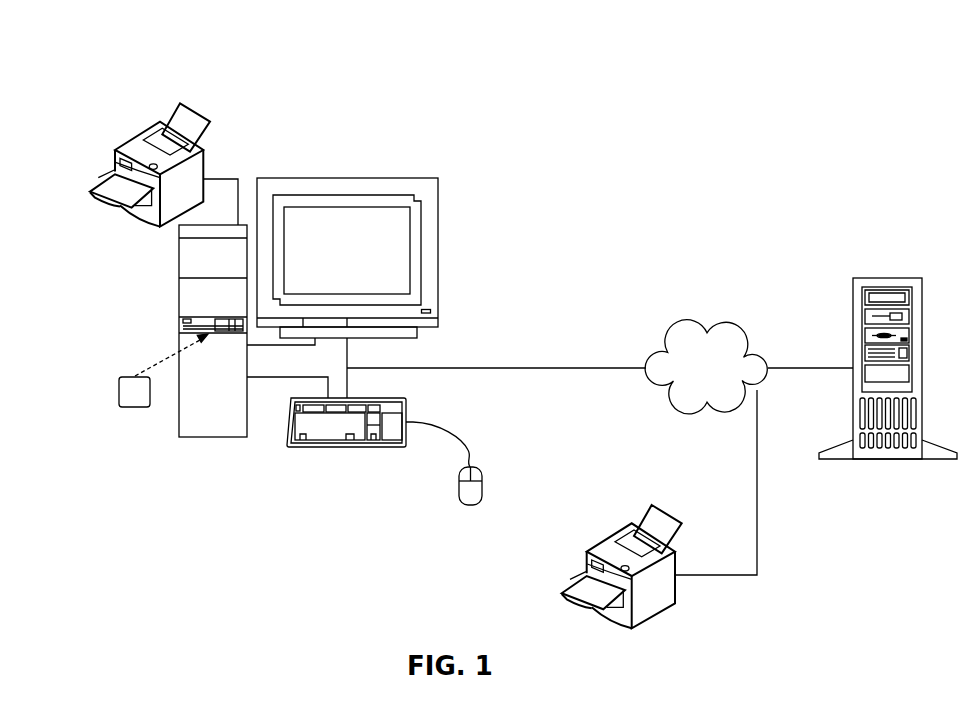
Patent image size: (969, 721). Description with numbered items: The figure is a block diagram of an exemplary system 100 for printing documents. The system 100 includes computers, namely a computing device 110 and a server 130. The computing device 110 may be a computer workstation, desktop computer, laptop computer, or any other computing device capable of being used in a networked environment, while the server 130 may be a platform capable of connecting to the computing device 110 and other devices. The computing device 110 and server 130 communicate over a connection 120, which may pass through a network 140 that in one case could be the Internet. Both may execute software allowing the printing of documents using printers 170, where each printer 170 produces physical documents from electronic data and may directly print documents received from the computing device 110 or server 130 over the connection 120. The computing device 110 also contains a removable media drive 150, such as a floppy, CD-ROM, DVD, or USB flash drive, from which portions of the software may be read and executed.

The system 100 is at (222, 33).
The computing device 110 is at (346, 178).
The connection 120 is at (600, 461).
The server 130 is at (886, 278).
The network 140 is at (723, 378).
The removable media drive 150 is at (163, 384).
The printer 170 is at (90, 188).